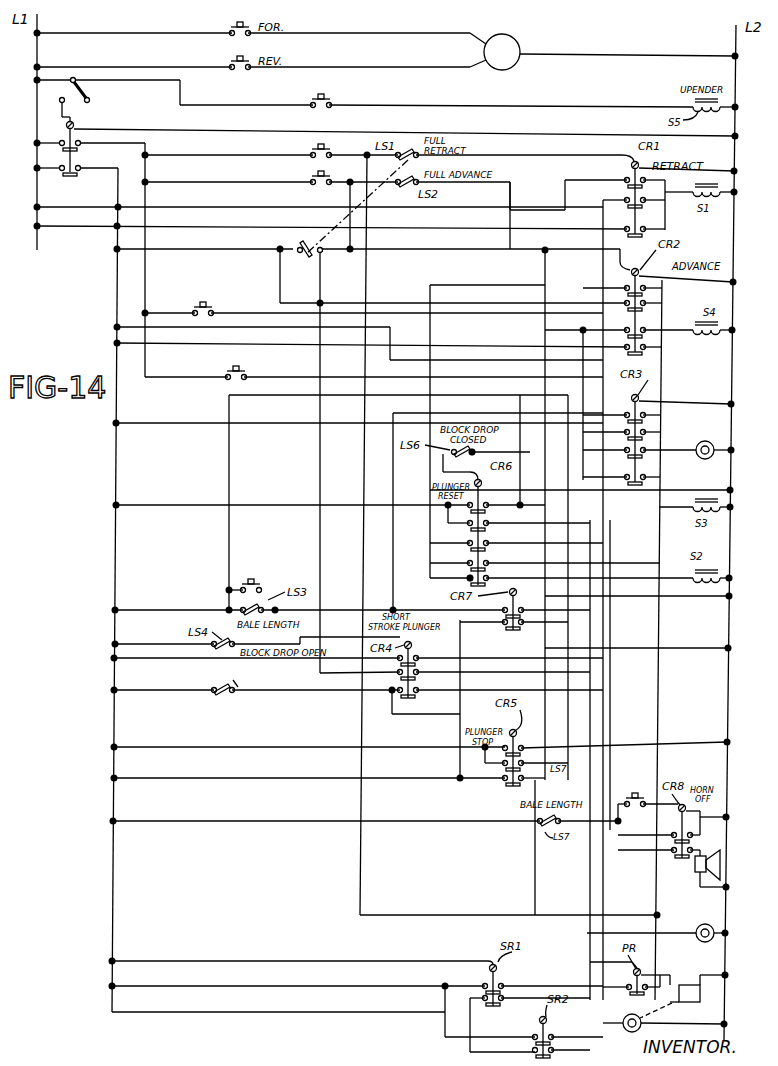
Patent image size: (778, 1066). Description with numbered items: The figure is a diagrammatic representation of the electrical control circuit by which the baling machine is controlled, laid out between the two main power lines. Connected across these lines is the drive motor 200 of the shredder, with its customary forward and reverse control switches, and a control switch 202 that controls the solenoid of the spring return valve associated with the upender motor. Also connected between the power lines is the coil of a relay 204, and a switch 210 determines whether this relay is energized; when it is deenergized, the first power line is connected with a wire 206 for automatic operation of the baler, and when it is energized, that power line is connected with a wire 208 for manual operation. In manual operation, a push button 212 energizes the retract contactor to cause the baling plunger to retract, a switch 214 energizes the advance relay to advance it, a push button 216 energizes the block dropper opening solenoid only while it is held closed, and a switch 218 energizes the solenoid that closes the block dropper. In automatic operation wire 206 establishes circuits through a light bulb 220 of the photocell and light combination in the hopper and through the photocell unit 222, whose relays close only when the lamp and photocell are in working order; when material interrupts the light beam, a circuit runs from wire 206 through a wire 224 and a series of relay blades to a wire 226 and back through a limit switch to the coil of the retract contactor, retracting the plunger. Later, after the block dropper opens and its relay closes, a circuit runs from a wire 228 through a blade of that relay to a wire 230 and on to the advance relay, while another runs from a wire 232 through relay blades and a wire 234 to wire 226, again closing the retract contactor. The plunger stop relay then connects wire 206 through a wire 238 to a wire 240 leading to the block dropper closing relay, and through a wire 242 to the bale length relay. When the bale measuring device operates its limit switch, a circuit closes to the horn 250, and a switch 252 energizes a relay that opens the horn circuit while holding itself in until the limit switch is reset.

The drive motor 200 is at (516, 63).
The control switch 202 is at (336, 103).
The relay 204 is at (77, 126).
The wire 206 is at (112, 286).
The wire 208 is at (148, 210).
The switch 210 is at (80, 92).
The push button 212 is at (328, 143).
The switch 214 is at (312, 172).
The push button 216 is at (216, 312).
The switch 218 is at (233, 380).
The light bulb 220 is at (641, 1027).
The photocell unit 222 is at (690, 1002).
The wire 224 is at (153, 342).
The wire 226 is at (364, 890).
The wire 228 is at (258, 253).
The wire 230 is at (483, 254).
The wire 232 is at (139, 660).
The wire 234 is at (659, 686).
The wire 238 is at (323, 740).
The wire 240 is at (548, 682).
The wire 242 is at (389, 780).
The horn 250 is at (722, 860).
The switch 252 is at (645, 792).